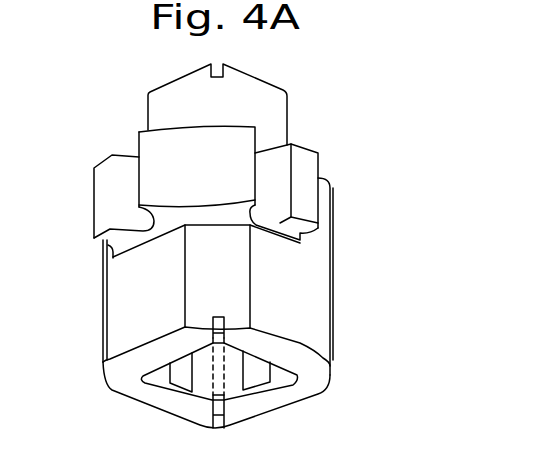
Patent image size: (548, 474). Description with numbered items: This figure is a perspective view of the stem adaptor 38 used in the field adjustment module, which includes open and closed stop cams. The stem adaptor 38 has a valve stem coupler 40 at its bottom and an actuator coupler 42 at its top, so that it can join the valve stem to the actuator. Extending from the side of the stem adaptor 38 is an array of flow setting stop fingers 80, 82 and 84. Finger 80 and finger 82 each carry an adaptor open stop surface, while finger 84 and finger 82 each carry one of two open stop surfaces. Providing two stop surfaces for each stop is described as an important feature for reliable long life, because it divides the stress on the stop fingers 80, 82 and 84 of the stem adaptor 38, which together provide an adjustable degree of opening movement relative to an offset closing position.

The stem adaptor 38 is at (336, 103).
The valve stem coupler 40 is at (260, 370).
The actuator coupler 42 is at (253, 90).
The flow setting stop finger 80 is at (307, 177).
The flow setting stop finger 82 is at (165, 153).
The flow setting stop finger 84 is at (102, 202).